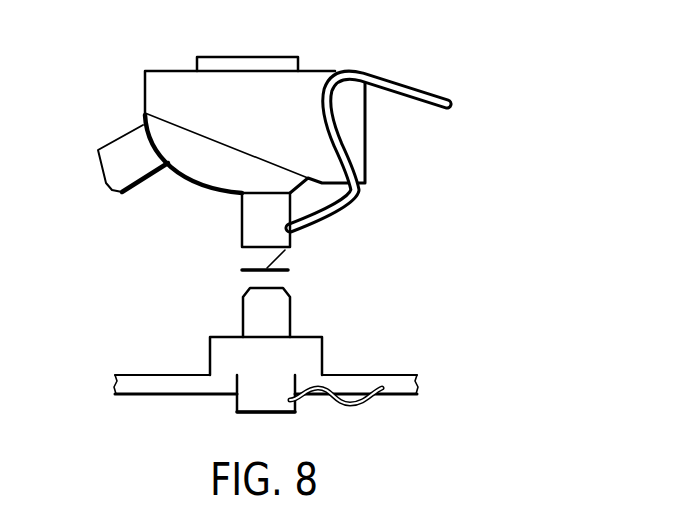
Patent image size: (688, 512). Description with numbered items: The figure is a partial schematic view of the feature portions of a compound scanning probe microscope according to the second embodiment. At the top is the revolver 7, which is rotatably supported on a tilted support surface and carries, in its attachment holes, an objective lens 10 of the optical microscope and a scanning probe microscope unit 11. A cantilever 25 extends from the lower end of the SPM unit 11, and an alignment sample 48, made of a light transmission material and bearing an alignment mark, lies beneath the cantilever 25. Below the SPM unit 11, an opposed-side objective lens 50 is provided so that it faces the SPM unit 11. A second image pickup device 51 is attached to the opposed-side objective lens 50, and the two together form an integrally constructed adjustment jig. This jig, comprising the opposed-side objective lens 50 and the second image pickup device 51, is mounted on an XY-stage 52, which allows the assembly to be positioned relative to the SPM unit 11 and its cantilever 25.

The revolver 7 is at (144, 115).
The objective lens 10 is at (97, 165).
The scanning probe microscope unit 11 is at (242, 218).
The cantilever 25 is at (285, 258).
The alignment sample 48 is at (243, 268).
The opposed-side objective lens 50 is at (291, 312).
The second image pickup device 51 is at (237, 401).
The XY-stage 52 is at (148, 375).